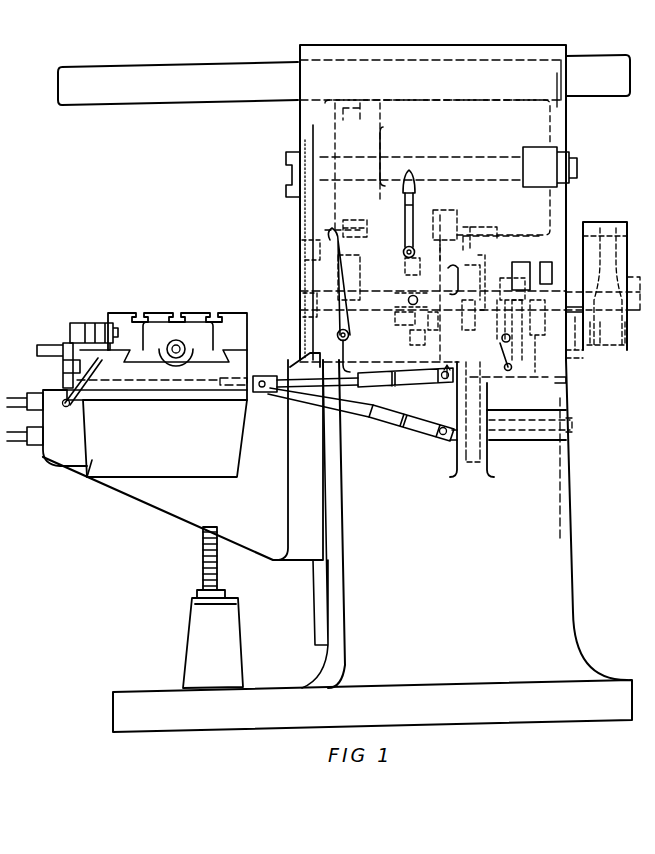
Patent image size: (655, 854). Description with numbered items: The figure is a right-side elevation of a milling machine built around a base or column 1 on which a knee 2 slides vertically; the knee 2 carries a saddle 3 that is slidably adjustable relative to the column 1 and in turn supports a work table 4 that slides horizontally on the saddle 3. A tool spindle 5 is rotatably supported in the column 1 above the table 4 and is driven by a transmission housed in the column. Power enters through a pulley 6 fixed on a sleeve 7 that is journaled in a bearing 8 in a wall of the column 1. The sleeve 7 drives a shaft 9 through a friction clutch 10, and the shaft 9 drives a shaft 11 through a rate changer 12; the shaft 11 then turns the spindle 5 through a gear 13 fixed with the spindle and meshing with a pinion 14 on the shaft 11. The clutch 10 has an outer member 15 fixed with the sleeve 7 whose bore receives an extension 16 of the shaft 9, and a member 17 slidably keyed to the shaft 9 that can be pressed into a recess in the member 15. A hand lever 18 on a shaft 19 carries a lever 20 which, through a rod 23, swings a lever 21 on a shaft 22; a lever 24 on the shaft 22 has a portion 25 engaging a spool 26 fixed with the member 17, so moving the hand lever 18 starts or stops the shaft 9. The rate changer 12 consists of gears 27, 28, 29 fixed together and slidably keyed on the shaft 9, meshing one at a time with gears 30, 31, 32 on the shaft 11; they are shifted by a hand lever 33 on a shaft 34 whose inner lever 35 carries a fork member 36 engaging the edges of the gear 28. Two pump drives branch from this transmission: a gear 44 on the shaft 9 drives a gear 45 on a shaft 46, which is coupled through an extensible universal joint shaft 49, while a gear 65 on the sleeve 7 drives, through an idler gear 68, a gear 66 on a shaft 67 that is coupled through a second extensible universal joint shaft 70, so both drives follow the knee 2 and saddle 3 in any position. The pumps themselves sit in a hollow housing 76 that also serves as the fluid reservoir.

The column 1 is at (572, 510).
The knee 2 is at (128, 490).
The saddle 3 is at (246, 362).
The work table 4 is at (234, 312).
The tool spindle 5 is at (292, 158).
The pulley 6 is at (618, 222).
The sleeve 7 is at (568, 292).
The bearing 8 is at (601, 356).
The shaft 9 is at (449, 282).
The friction clutch 10 is at (515, 242).
The shaft 11 is at (484, 236).
The rate changer 12 is at (446, 208).
The gear 13 is at (355, 123).
The pinion 14 is at (357, 262).
The outer member 15 is at (534, 343).
The extension 16 is at (578, 333).
The member 17 is at (512, 268).
The hand lever 18 is at (306, 278).
The shaft 19 is at (349, 336).
The lever 20 is at (350, 352).
The lever 21 is at (505, 350).
The shaft 22 is at (500, 343).
The rod 23 is at (402, 368).
The lever 24 is at (502, 338).
The portion 25 is at (500, 310).
The spool 26 is at (504, 283).
The gear 27 is at (403, 322).
The gear 28 is at (412, 338).
The gear 29 is at (432, 327).
The gear 30 is at (367, 226).
The gear 31 is at (414, 208).
The gear 32 is at (456, 215).
The hand lever 33 is at (411, 196).
The shaft 34 is at (404, 253).
The lever 35 is at (410, 268).
The fork member 36 is at (408, 294).
The gear 44 is at (468, 312).
The gear 45 is at (462, 455).
The shaft 46 is at (518, 430).
The extensible universal joint shaft 49 is at (396, 433).
The gear 65 is at (546, 262).
The gear 66 is at (566, 380).
The shaft 67 is at (494, 381).
The idler gear 68 is at (576, 354).
The extensible universal joint shaft 70 is at (404, 388).
The housing 76 is at (80, 478).